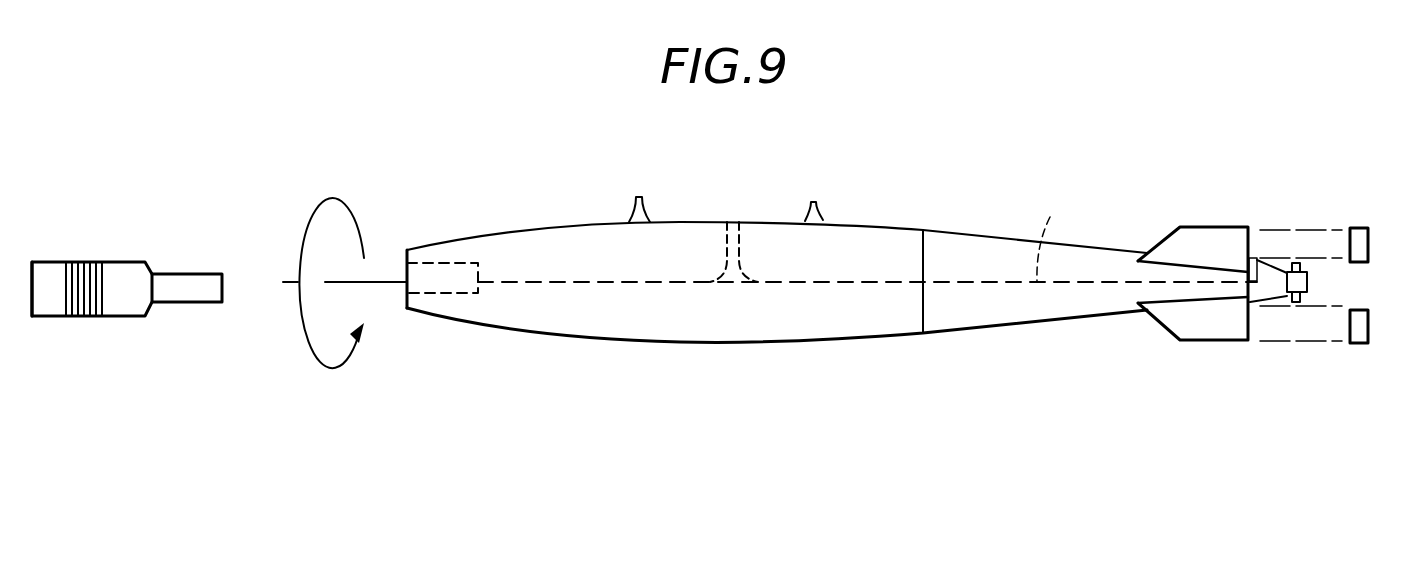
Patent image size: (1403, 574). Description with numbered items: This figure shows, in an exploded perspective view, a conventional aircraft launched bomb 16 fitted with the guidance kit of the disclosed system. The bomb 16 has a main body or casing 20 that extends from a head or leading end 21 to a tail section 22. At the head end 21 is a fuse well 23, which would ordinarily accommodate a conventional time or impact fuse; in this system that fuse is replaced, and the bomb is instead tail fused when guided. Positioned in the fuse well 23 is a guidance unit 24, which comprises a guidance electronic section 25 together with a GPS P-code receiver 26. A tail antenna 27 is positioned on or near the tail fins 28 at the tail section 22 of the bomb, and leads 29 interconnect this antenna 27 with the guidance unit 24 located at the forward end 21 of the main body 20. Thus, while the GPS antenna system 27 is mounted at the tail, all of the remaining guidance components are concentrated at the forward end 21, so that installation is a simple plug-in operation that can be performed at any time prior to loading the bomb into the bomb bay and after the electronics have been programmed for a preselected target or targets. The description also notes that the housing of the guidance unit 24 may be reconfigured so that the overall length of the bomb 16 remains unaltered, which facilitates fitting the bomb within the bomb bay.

The bomb 16 is at (933, 228).
The main body 20 is at (841, 325).
The head end 21 is at (410, 308).
The tail section 22 is at (1118, 252).
The fuse well 23 is at (436, 263).
The guidance unit 24 is at (50, 262).
The guidance electronic section 25 is at (53, 317).
The GPS P-code receiver 26 is at (147, 317).
The tail antenna 27 is at (1362, 344).
The tail fins 28 is at (1247, 225).
The leads 29 is at (1037, 236).